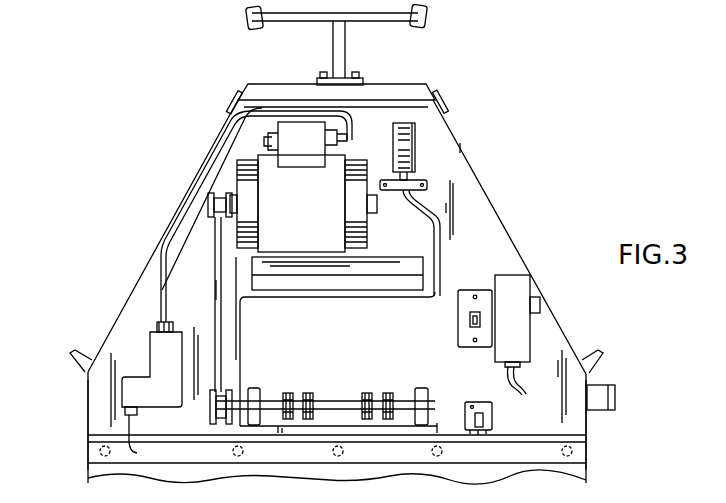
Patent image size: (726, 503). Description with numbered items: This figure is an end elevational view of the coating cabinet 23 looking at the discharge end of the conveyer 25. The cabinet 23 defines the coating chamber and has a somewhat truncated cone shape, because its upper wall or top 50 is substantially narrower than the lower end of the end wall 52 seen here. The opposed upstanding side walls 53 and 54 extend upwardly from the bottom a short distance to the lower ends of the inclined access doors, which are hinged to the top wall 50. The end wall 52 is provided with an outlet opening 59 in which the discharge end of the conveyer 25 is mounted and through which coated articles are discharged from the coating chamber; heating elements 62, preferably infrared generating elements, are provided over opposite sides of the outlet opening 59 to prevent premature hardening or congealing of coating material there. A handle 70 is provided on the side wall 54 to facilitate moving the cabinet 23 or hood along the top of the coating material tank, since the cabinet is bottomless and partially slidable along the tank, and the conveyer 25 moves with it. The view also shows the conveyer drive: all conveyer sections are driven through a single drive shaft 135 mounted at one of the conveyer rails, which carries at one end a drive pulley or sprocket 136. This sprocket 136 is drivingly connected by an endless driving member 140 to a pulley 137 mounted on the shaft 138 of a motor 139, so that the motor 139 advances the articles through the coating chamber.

The coating cabinet 23 is at (467, 150).
The conveyer 25 is at (368, 392).
The top wall 50 is at (404, 86).
The end wall 52 is at (510, 257).
The side wall 53 is at (88, 415).
The side wall 54 is at (592, 418).
The outlet opening 59 is at (432, 347).
The heating elements 62 is at (411, 266).
The handle 70 is at (617, 392).
The drive shaft 135 is at (278, 395).
The drive pulley or sprocket 136 is at (213, 422).
The pulley 137 is at (215, 216).
The motor shaft 138 is at (212, 201).
The motor 139 is at (353, 174).
The endless driving member 140 is at (220, 297).